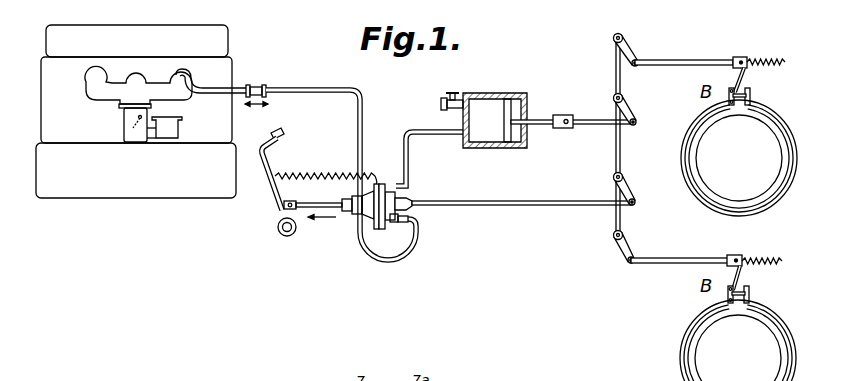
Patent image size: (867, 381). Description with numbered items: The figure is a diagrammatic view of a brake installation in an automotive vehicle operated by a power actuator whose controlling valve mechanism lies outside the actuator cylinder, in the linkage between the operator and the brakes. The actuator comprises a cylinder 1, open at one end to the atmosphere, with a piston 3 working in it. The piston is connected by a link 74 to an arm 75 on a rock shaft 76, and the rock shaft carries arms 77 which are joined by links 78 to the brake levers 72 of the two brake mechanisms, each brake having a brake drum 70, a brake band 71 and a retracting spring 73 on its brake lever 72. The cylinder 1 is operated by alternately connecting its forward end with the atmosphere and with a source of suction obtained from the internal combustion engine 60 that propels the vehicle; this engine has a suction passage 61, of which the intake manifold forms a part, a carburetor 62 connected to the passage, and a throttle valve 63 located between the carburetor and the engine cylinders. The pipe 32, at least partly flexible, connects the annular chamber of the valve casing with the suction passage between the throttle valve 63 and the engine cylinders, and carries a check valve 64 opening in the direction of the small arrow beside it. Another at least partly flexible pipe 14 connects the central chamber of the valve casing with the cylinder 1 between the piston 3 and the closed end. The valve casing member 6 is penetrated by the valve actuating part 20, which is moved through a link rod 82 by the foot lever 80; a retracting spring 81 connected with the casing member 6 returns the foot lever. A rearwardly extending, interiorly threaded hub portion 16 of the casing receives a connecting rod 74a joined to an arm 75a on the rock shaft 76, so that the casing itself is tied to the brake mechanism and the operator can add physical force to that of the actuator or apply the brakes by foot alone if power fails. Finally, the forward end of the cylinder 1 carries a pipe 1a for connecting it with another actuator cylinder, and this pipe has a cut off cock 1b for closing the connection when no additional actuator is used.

The cylinder 1 is at (485, 93).
The pipe 1a is at (441, 101).
The cut off cock 1b is at (455, 92).
The piston 3 is at (512, 134).
The valve casing member 6 is at (378, 183).
The pipe 14 is at (409, 170).
The hub portion 16 is at (413, 201).
The valve actuating part 20 is at (350, 212).
The pipe 32 is at (361, 98).
The internal combustion engine 60 is at (219, 43).
The suction passage 61 is at (97, 88).
The carburetor 62 is at (124, 119).
The throttle valve 63 is at (133, 130).
The check valve 64 is at (257, 85).
The brake drum 70 is at (698, 172).
The brake band 71 is at (684, 150).
The brake lever 72 is at (748, 83).
The retracting spring 73 is at (758, 58).
The link 74 is at (588, 118).
The connecting rod 74a is at (519, 206).
The arm 75 is at (636, 111).
The arm 75a is at (633, 191).
The rock shaft 76 is at (615, 150).
The arm 77 is at (636, 48).
The link 78 is at (694, 59).
The foot lever 80 is at (277, 188).
The retracting spring 81 is at (300, 175).
The link rod 82 is at (327, 203).